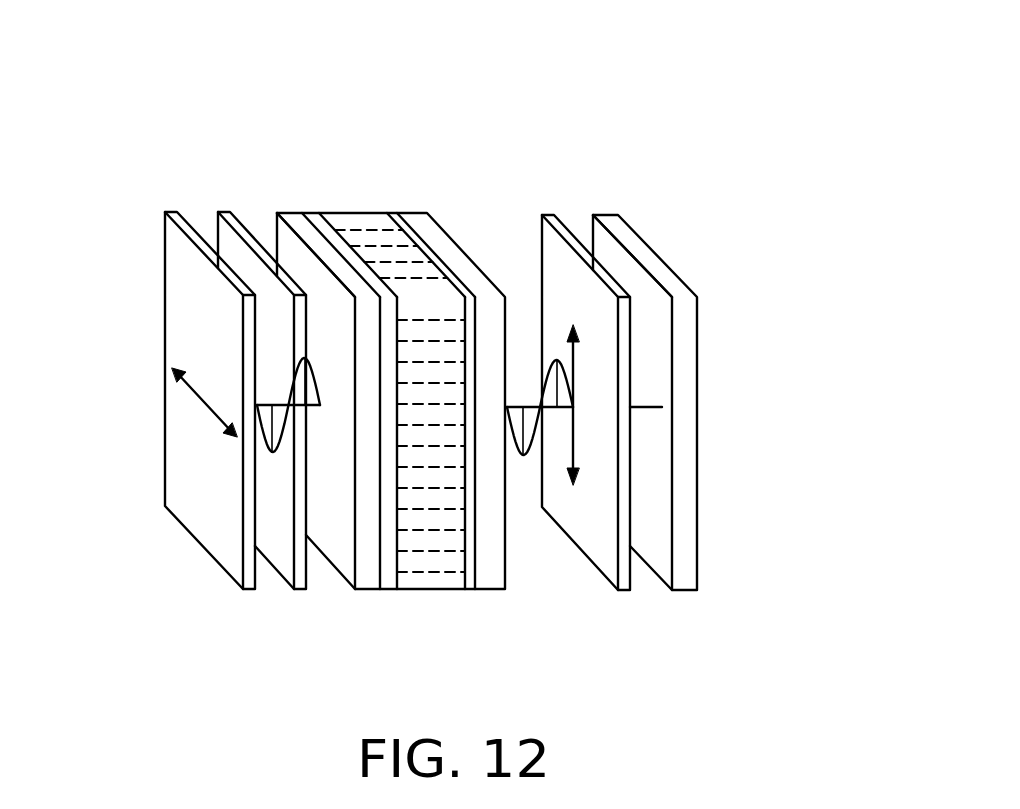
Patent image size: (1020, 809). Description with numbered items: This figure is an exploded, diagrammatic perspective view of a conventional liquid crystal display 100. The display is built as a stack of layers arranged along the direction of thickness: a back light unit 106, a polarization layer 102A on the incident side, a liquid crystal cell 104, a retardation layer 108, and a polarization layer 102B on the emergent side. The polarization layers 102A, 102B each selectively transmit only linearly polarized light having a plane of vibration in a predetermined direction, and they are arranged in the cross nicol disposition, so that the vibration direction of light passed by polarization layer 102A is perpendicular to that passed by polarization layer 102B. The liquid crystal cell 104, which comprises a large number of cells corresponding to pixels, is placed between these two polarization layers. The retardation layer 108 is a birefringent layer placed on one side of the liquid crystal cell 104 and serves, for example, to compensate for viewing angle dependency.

The liquid crystal display 100 is at (502, 108).
The polarization layer on the incident side 102A is at (543, 214).
The polarization layer on the emergent side 102B is at (165, 211).
The liquid crystal cell 104 is at (385, 202).
The back light unit 106 is at (618, 214).
The retardation layer 108 is at (219, 211).